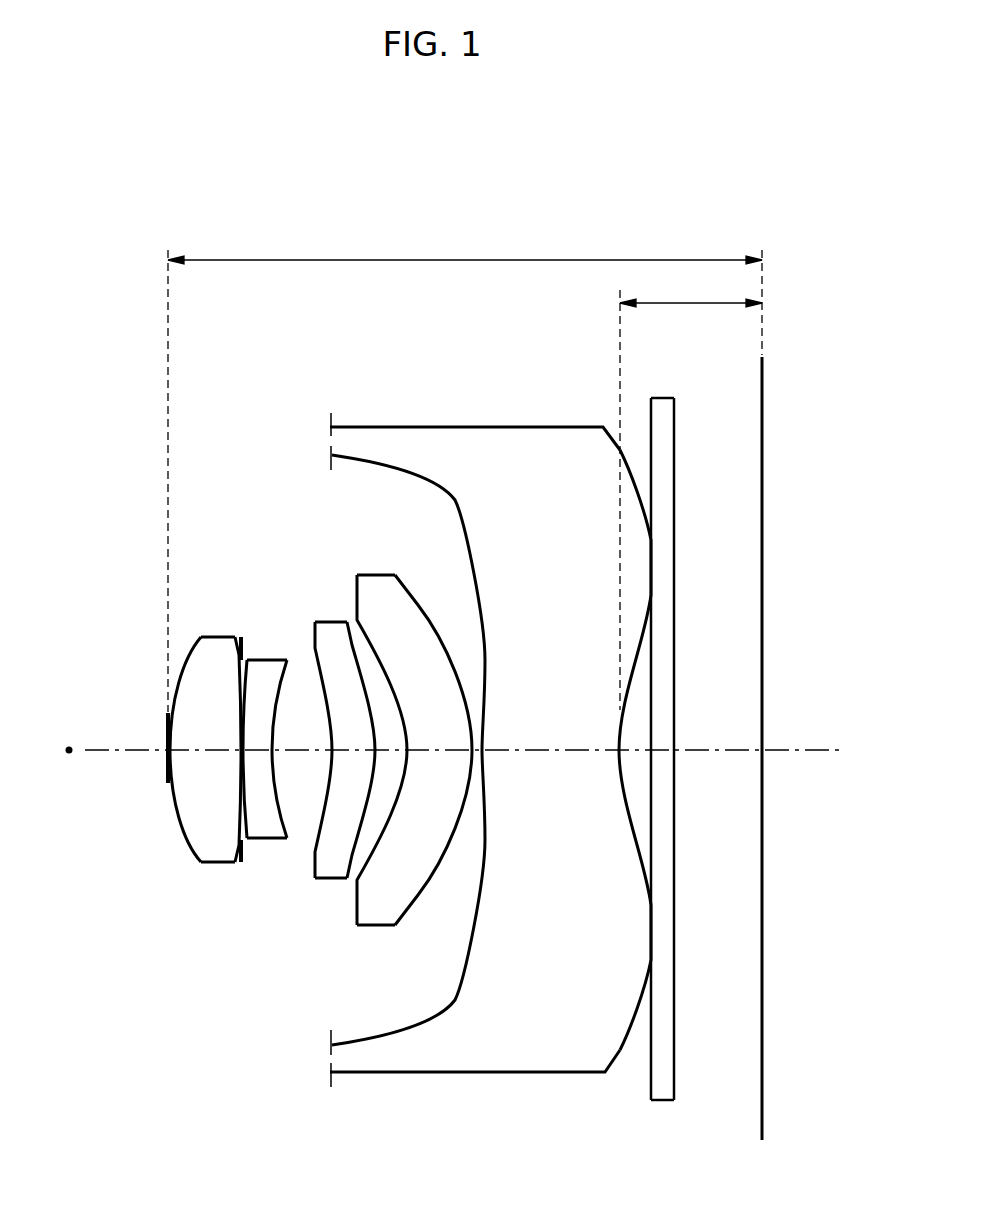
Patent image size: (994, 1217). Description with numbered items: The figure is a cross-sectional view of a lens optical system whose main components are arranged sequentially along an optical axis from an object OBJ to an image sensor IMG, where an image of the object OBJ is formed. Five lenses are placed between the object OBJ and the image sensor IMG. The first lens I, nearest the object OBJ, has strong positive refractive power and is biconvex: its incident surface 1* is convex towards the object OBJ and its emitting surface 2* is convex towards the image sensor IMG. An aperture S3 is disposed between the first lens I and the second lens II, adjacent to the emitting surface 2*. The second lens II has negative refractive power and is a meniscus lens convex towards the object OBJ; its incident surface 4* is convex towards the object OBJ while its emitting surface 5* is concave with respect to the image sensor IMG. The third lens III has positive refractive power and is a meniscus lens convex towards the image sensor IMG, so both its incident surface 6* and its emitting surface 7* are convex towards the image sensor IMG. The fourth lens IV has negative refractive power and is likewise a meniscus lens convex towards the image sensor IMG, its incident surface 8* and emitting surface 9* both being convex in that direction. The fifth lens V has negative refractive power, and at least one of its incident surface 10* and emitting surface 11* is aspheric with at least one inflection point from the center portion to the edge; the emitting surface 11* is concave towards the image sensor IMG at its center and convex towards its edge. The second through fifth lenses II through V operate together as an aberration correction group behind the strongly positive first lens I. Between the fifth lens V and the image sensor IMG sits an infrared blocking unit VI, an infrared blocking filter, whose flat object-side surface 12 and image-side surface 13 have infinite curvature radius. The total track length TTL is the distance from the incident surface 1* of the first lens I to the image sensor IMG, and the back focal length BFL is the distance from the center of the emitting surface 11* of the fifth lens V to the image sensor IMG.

The incident surface of the first lens 1 is at (198, 650).
The emitting surface of the first lens 2 is at (236, 650).
The aperture S3 is at (242, 650).
The incident surface of the second lens 4 is at (250, 680).
The emitting surface of the second lens 5 is at (285, 672).
The incident surface of the third lens 6 is at (320, 650).
The emitting surface of the third lens 7 is at (350, 650).
The incident surface of the fourth lens 8 is at (368, 622).
The emitting surface of the fourth lens 9 is at (415, 600).
The incident surface of the fifth lens 10 is at (458, 515).
The emitting surface of the fifth lens 11 is at (612, 445).
The object-side surface of the infrared blocking unit 12 is at (652, 445).
The image-side surface of the infrared blocking unit 13 is at (673, 460).
The first lens I is at (205, 744).
The second lens II is at (273, 750).
The third lens III is at (336, 752).
The fourth lens IV is at (413, 750).
The fifth lens V is at (490, 753).
The infrared blocking unit VI is at (670, 756).
The object OBJ is at (65, 738).
The image sensor IMG is at (764, 405).
The total track length TTL is at (465, 249).
The back focal length BFL is at (691, 292).